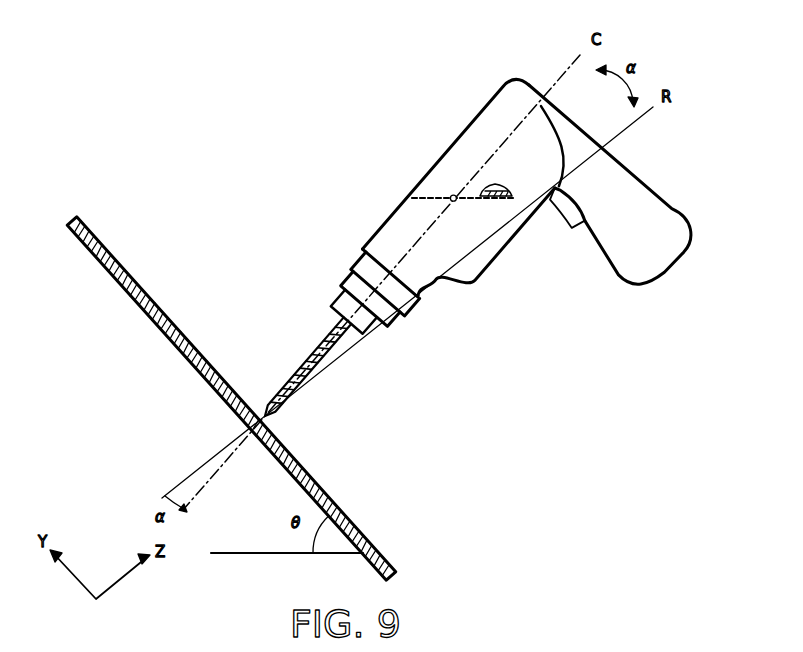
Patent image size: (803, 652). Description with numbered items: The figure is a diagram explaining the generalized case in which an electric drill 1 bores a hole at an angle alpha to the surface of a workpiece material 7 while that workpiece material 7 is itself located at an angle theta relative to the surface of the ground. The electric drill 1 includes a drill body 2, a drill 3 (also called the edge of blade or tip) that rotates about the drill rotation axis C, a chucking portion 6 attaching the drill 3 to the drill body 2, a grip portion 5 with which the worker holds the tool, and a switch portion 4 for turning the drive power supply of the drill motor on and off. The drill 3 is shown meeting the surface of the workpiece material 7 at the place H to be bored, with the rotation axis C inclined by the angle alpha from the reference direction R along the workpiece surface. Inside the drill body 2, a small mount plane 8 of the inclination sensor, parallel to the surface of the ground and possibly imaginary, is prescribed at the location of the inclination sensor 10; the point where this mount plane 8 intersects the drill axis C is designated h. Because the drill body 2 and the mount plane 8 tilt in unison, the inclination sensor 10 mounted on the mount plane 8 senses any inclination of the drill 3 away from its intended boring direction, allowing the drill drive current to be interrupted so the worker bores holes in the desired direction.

The electric drill 1 is at (485, 228).
The drill body 2 is at (502, 113).
The drill 3 is at (330, 350).
The switch portion 4 is at (572, 226).
The grip portion 5 is at (672, 217).
The chucking portion 6 is at (390, 313).
The workpiece material 7 is at (113, 255).
The mount plane of the inclination sensor 8 is at (416, 197).
The inclination sensor 10 is at (498, 184).